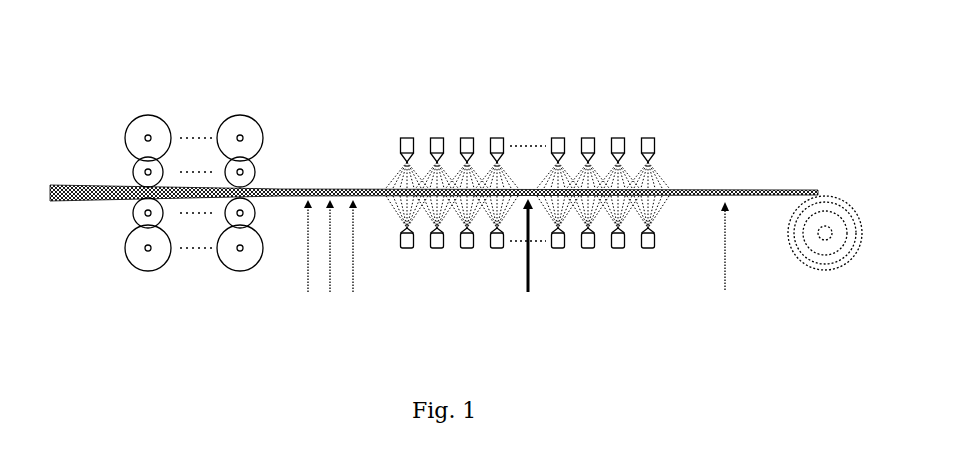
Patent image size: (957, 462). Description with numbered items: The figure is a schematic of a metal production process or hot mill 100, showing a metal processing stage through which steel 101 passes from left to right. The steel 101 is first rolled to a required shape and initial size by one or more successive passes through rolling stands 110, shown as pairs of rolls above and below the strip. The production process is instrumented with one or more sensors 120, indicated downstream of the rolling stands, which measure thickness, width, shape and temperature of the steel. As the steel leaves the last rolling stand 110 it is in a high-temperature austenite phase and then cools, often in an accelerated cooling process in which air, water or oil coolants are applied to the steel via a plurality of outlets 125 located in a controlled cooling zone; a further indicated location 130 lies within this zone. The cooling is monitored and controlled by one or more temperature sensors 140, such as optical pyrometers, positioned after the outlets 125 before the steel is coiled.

The steel strip treatment system 100 is at (456, 175).
The steel 101 is at (92, 185).
The rolling stands 110 is at (225, 272).
The sensors 120 is at (330, 259).
The outlets 125 is at (547, 136).
The process step / treatment zone 130 is at (528, 258).
The temperature sensors 140 is at (720, 260).